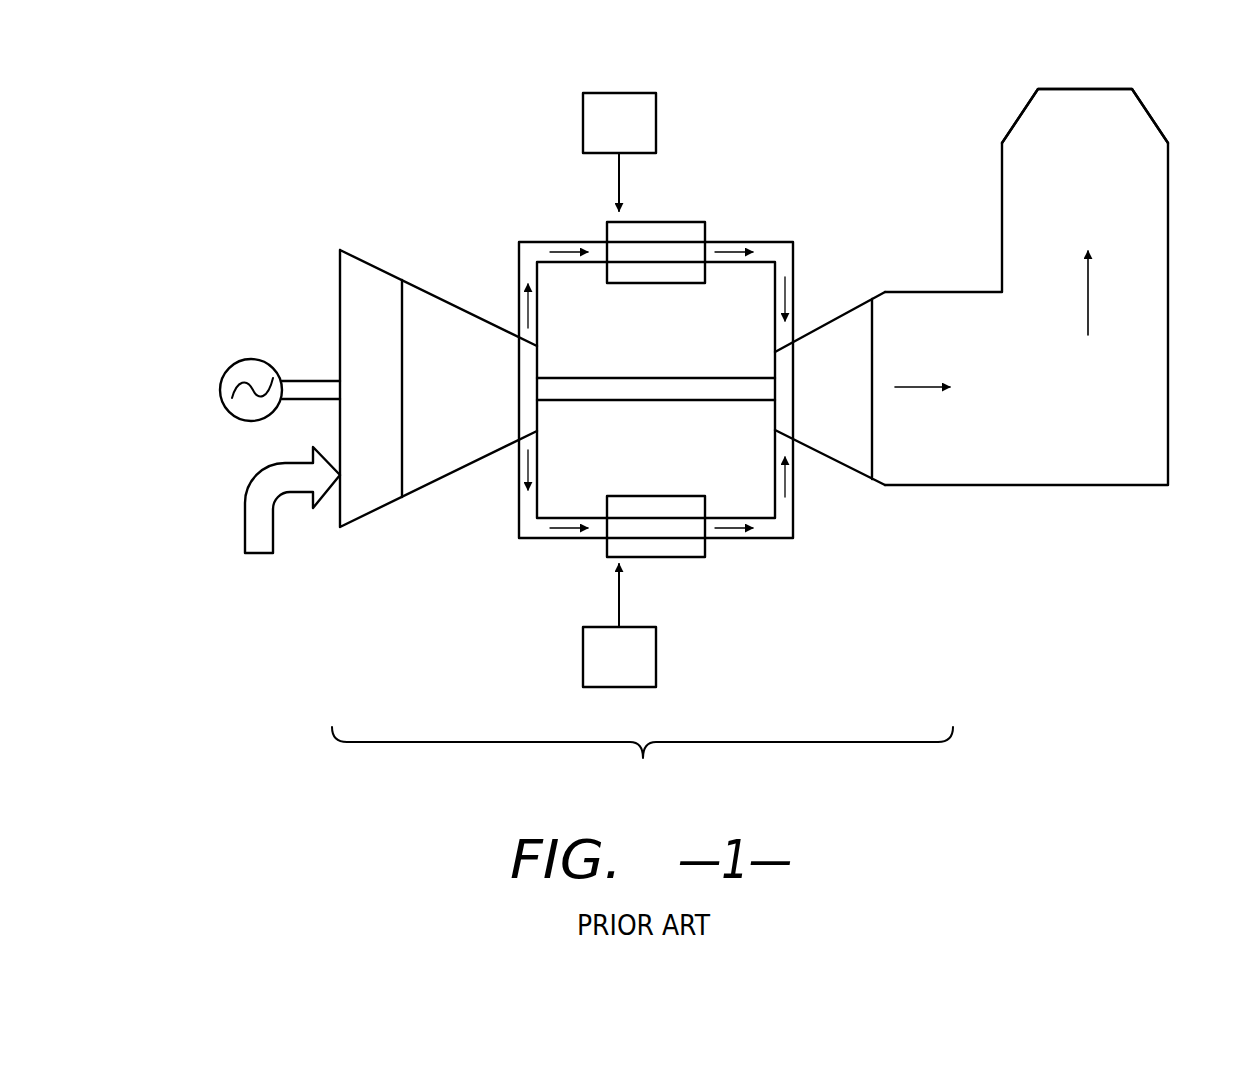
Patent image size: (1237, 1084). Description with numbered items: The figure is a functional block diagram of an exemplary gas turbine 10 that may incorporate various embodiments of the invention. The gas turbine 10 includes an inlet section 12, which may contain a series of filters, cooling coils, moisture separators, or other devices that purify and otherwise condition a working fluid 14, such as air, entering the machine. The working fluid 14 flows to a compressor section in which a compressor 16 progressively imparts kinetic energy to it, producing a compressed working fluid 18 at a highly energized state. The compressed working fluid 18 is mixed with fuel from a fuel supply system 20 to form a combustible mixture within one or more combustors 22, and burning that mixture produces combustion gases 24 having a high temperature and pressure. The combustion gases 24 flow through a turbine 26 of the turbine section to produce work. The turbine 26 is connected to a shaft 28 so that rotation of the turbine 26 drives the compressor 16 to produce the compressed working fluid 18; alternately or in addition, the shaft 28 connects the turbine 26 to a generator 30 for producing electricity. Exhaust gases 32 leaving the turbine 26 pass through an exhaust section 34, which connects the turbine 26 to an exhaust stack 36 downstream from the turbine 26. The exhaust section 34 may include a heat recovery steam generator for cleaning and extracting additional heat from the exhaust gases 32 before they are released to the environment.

The gas turbine 10 is at (642, 763).
The inlet section 12 is at (386, 398).
The working fluid 14 is at (255, 558).
The compressor 16 is at (479, 398).
The compressed working fluid 18 is at (530, 315).
The fuel supply system 20 is at (636, 138).
The combustor 22 is at (672, 267).
The combustion gases 24 is at (788, 295).
The turbine 26 is at (838, 401).
The shaft 28 is at (652, 402).
The generator 30 is at (242, 357).
The exhaust gases 32 is at (913, 389).
The exhaust section 34 is at (1096, 410).
The exhaust stack 36 is at (1168, 177).